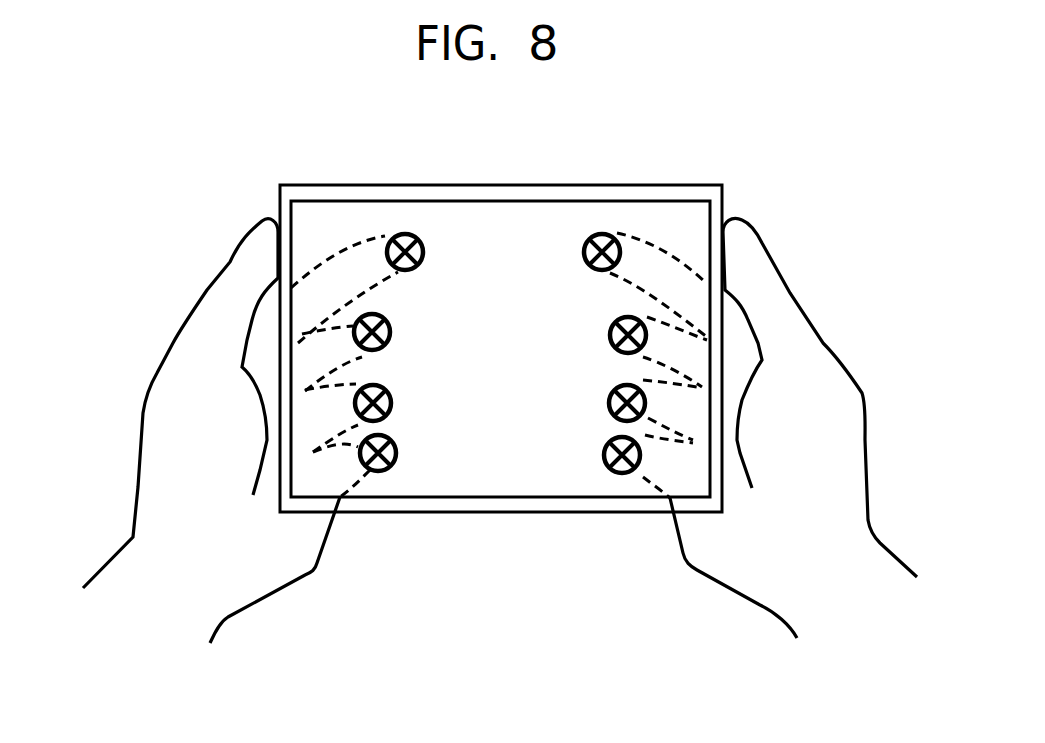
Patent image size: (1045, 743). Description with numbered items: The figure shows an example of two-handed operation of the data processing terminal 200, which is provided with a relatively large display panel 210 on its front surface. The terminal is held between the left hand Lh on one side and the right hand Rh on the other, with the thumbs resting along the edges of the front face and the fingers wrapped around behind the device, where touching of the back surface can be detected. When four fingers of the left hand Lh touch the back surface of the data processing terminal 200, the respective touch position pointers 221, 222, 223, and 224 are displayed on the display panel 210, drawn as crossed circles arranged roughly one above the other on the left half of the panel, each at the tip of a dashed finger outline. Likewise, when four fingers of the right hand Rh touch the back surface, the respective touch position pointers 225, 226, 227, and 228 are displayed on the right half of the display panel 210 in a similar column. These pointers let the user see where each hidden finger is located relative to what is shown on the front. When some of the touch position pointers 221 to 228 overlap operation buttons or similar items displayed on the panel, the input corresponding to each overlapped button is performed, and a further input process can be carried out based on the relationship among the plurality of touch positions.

The data processing terminal 200 is at (560, 513).
The display panel 210 is at (449, 478).
The touch position pointer 221 is at (425, 250).
The touch position pointer 222 is at (392, 332).
The touch position pointer 223 is at (393, 402).
The touch position pointer 224 is at (398, 452).
The touch position pointer 225 is at (585, 262).
The touch position pointer 226 is at (608, 337).
The touch position pointer 227 is at (607, 404).
The touch position pointer 228 is at (602, 456).
The left hand Lh is at (162, 440).
The right hand Rh is at (840, 475).